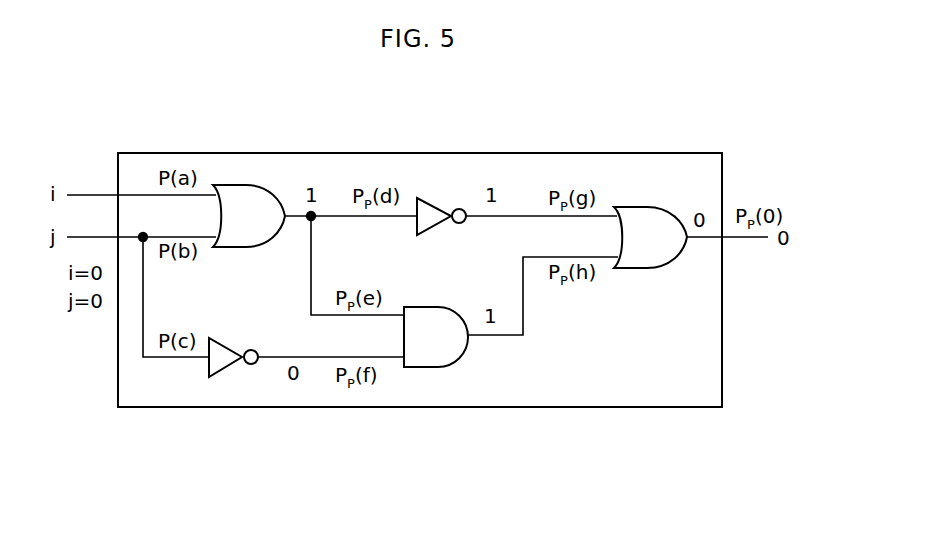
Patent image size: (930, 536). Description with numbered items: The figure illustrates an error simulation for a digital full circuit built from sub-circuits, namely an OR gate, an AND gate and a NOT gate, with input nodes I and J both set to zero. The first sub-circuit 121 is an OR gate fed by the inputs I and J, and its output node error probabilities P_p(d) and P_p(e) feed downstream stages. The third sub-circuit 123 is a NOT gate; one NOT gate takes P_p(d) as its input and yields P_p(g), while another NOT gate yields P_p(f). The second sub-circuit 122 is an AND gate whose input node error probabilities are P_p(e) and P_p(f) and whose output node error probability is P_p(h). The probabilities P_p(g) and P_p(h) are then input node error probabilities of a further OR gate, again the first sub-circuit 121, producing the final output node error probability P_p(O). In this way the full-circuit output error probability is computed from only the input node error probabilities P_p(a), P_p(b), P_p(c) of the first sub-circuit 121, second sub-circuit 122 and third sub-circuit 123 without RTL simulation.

The first sub-circuit 121 is at (640, 207).
The second sub-circuit 122 is at (427, 367).
The third sub-circuit 123 is at (227, 433).